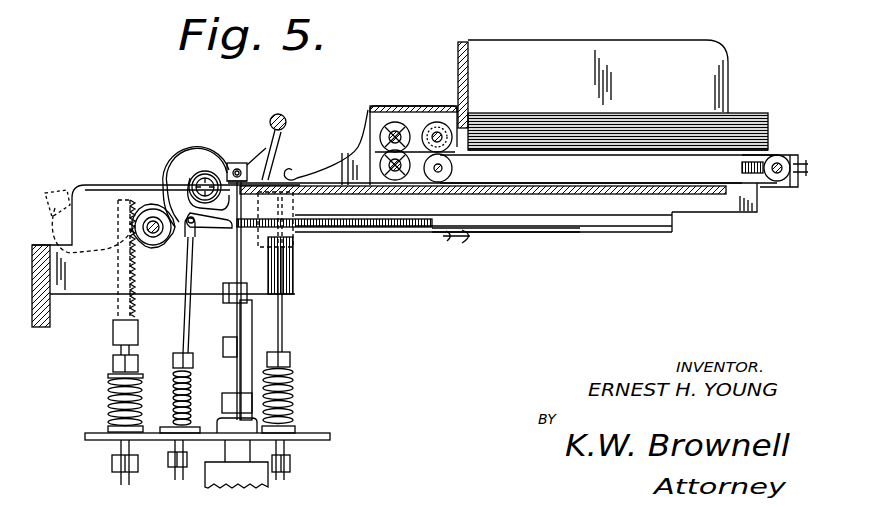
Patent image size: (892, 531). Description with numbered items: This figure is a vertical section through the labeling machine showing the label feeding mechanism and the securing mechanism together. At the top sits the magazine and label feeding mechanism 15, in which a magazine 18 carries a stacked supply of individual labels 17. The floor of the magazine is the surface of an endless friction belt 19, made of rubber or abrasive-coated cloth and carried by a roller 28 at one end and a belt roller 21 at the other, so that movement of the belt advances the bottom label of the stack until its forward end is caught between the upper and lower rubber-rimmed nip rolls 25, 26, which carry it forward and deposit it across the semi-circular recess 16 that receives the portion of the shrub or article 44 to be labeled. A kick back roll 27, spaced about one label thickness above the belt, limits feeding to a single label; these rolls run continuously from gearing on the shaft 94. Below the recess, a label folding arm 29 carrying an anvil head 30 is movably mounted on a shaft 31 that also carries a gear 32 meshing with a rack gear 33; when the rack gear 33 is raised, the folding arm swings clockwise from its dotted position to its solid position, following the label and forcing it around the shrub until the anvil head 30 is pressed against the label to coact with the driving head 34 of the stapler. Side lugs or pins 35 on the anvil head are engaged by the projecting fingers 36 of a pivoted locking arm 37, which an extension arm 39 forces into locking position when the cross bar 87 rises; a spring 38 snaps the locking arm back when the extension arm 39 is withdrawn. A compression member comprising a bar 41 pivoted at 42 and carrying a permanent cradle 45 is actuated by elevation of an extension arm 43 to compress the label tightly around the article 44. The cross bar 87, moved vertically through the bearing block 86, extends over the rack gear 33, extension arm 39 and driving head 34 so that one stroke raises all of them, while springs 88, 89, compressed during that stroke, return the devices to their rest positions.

The magazine and label feeding mechanism 15 is at (282, 113).
The semi-circular recess 16 is at (417, 87).
The label 17 is at (738, 116).
The magazine 18 is at (708, 42).
The endless friction belt 19 is at (773, 155).
The belt roller 21 is at (779, 182).
The upper nip roll 25 is at (393, 125).
The lower nip roll 26 is at (385, 158).
The kick back roll 27 is at (437, 120).
The roller 28 is at (454, 168).
The label folding arm 29 is at (164, 162).
The anvil head 30 is at (234, 163).
The shaft 31 is at (153, 237).
The gear 32 is at (143, 205).
The rack gear 33 is at (118, 308).
The driving head 34 is at (238, 310).
The side lugs or pins 35 is at (236, 161).
The projecting fingers 36 is at (238, 163).
The locking arm 37 is at (307, 145).
The spring 38 is at (293, 246).
The extension arm 39 is at (283, 308).
The bar 41 is at (214, 228).
The pivot 42 is at (226, 286).
The extension arm 43 is at (184, 318).
The shrub or article 44 is at (207, 172).
The permanent cradle 45 is at (167, 178).
The bearing block 86 is at (222, 478).
The cross bar 87 is at (326, 433).
The spring 88 is at (295, 386).
The spring 89 is at (110, 387).
The shaft 94 is at (388, 192).